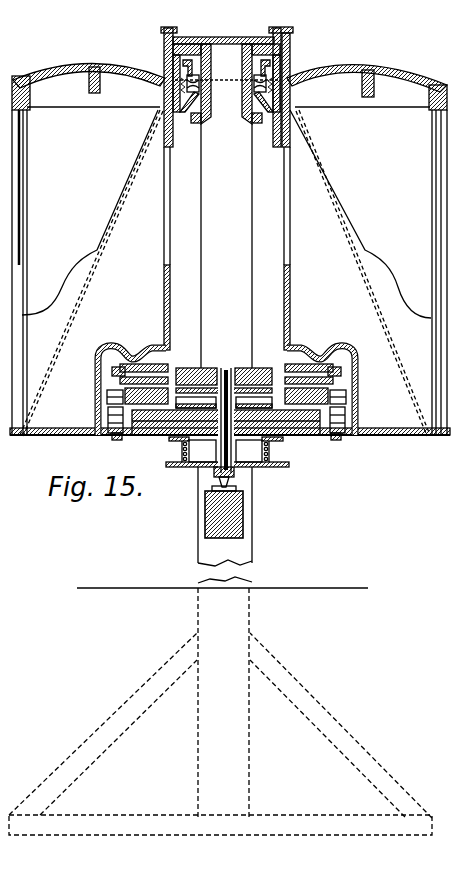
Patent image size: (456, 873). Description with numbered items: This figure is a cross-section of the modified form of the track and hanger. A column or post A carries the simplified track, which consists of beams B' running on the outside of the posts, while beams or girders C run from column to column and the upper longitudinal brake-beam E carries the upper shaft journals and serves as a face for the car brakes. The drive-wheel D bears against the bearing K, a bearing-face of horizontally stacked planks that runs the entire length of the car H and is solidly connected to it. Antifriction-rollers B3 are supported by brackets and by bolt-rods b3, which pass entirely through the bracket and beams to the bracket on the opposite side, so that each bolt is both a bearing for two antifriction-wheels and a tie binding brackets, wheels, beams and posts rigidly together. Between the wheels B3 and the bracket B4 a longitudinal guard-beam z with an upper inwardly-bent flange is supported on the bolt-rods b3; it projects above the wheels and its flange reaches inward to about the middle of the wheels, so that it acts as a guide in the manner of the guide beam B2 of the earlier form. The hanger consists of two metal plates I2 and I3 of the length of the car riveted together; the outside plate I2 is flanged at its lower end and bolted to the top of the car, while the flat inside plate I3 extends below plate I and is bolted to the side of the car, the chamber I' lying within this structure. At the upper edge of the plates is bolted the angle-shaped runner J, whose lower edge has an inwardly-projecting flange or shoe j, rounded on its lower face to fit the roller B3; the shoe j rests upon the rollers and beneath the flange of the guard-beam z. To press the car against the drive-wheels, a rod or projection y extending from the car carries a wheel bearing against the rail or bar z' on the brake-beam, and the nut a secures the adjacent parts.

The hanger plate I is at (155, 186).
The dome chamber I' is at (205, 85).
The outside hanger plate I2 is at (286, 46).
The inside hanger plate I3 is at (281, 79).
The ⌐-shaped runner beam J is at (226, 63).
The track beam B' is at (226, 74).
The guide beam B2 is at (367, 241).
The antifriction-roller B3 is at (266, 118).
The bracket B4 is at (188, 124).
The bolt-rod b3 is at (227, 94).
The longitudinal guard-beam z is at (211, 77).
The rail or bar z' is at (226, 254).
The flange or shoe j is at (174, 68).
The car H is at (225, 273).
The column or post A is at (226, 246).
The longitudinal brake-beam E is at (223, 409).
The rod or projection y is at (270, 360).
The drive-wheel D is at (226, 417).
The bearing K is at (226, 405).
The nut a is at (235, 475).
The beam or girder C is at (205, 517).